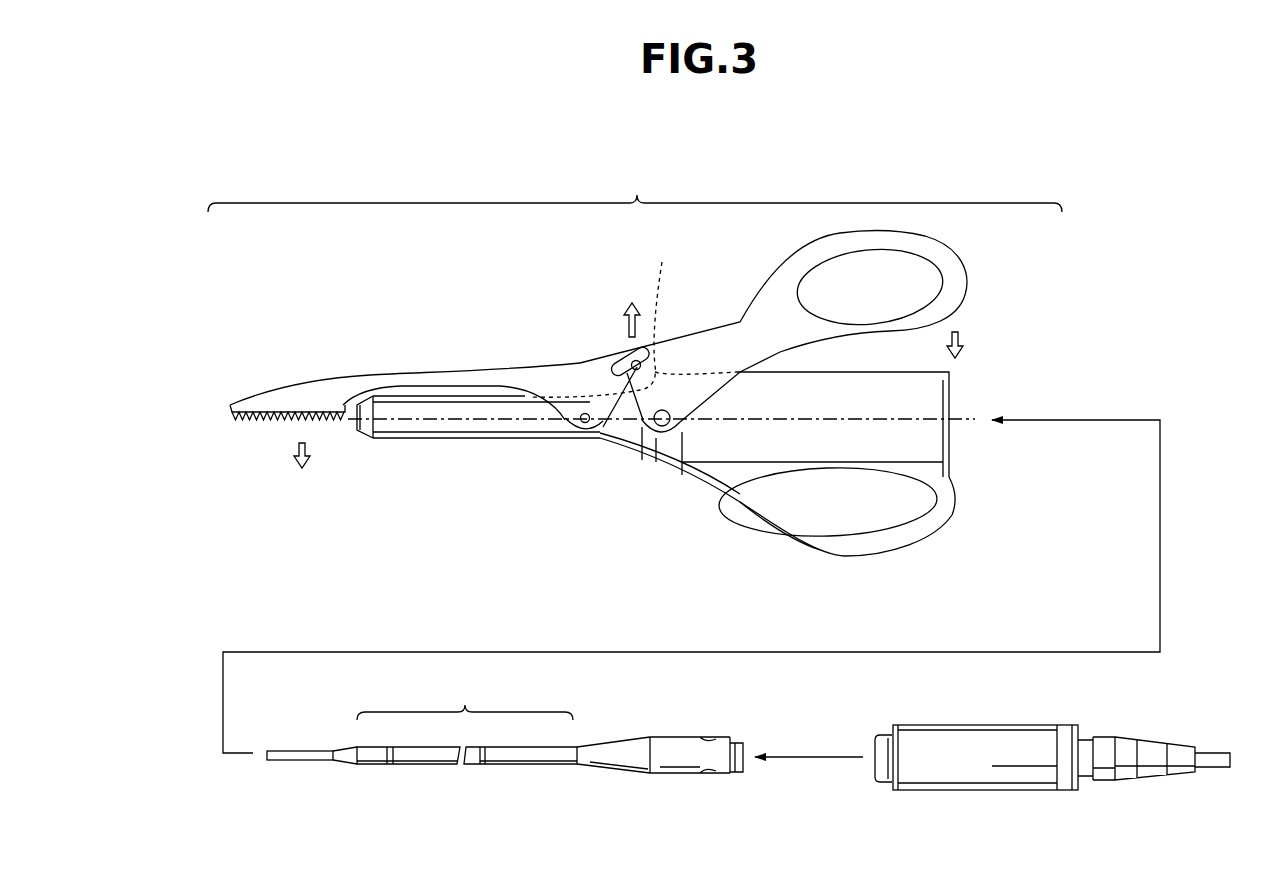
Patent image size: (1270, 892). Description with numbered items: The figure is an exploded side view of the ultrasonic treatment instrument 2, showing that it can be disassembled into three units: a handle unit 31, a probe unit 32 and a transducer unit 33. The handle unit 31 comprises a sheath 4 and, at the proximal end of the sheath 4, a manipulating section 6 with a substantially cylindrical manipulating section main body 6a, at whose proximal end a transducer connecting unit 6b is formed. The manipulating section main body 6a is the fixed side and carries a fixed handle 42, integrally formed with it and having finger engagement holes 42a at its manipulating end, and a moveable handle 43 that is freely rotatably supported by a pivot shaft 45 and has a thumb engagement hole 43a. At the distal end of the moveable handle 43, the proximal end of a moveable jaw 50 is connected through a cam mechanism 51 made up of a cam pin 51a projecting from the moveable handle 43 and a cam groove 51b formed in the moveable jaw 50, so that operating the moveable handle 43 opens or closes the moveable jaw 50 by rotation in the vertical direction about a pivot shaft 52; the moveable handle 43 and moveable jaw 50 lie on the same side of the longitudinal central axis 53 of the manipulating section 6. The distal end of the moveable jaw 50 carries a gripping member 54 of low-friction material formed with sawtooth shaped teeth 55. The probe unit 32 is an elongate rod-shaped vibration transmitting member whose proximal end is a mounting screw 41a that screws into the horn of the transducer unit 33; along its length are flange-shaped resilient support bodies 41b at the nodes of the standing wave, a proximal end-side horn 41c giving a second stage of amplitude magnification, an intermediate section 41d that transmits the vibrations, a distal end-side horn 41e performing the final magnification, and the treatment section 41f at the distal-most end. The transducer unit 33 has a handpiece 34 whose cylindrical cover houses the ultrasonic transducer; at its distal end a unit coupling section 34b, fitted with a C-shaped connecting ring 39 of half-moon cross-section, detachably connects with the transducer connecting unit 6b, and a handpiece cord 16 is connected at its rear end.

The ultrasonic treatment instrument 2 is at (888, 190).
The handle unit 31 is at (635, 188).
The moveable jaw 50 is at (388, 382).
The gripping member 54 is at (232, 409).
The teeth 55 is at (250, 425).
The sheath 4 is at (450, 428).
The longitudinal central axis 53 is at (393, 440).
The moveable handle 43 is at (698, 343).
The thumb engagement hole 43a is at (918, 287).
The cam mechanism 51 is at (617, 336).
The cam pin 51a is at (633, 325).
The cam groove 51b is at (612, 367).
The pivot shaft 52 is at (583, 430).
The pivot shaft 45 is at (655, 434).
The transducer connecting unit 6b is at (960, 390).
The manipulating section 6 is at (602, 520).
The manipulating section main body 6a is at (712, 450).
The finger engagement holes 42a is at (806, 510).
The fixed handle 42 is at (882, 546).
The probe unit 32 is at (585, 778).
The treatment section 41f is at (285, 765).
The distal end-side horn 41e is at (343, 768).
The intermediate section 41d is at (465, 719).
The support body 41b is at (392, 768).
The proximal end-side horn 41c is at (633, 776).
The mounting screw 41a is at (738, 776).
The connecting ring 39 is at (873, 740).
The transducer unit 33 is at (968, 797).
The handpiece 34 is at (1032, 784).
The unit coupling section 34b is at (872, 787).
The handpiece cord 16 is at (1158, 745).